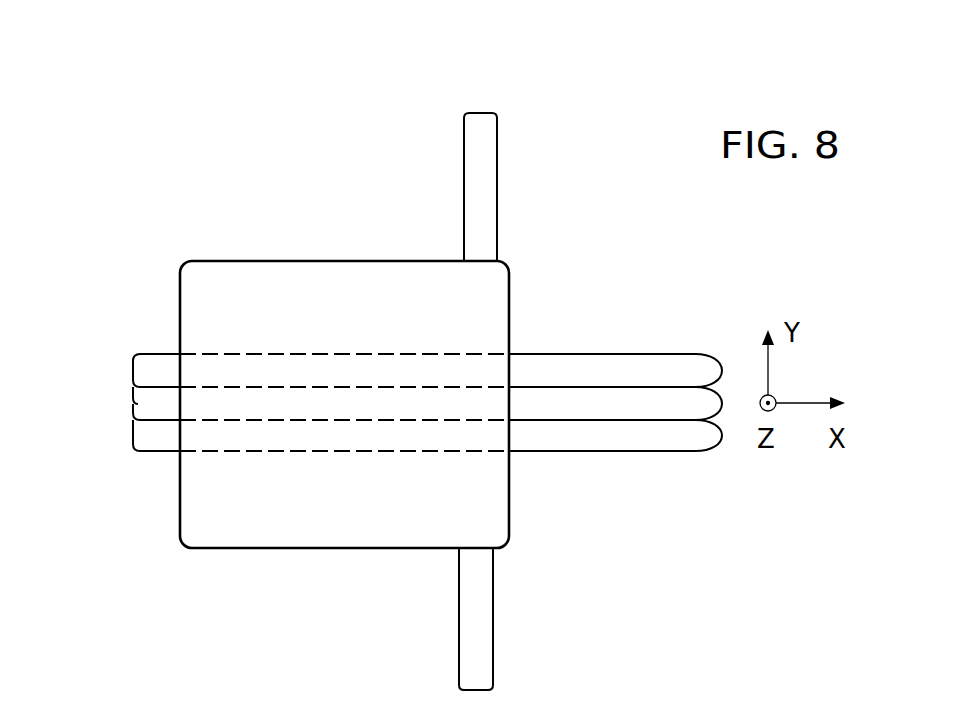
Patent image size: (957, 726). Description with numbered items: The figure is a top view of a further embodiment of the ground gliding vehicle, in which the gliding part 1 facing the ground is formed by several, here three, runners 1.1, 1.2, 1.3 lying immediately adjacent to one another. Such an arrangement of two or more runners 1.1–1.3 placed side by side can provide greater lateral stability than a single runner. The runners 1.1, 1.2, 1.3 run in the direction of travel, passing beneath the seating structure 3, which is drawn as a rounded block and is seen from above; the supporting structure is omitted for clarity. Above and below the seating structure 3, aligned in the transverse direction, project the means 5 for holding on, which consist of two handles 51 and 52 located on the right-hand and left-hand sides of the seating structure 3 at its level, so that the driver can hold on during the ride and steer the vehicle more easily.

The seating structure 3 is at (230, 285).
The means for holding on 5 is at (528, 401).
The handle 51 is at (477, 582).
The handle 52 is at (477, 223).
The gliding part 1 is at (387, 421).
The runner 1.1 is at (145, 436).
The runner 1.2 is at (145, 398).
The runner 1.3 is at (140, 368).